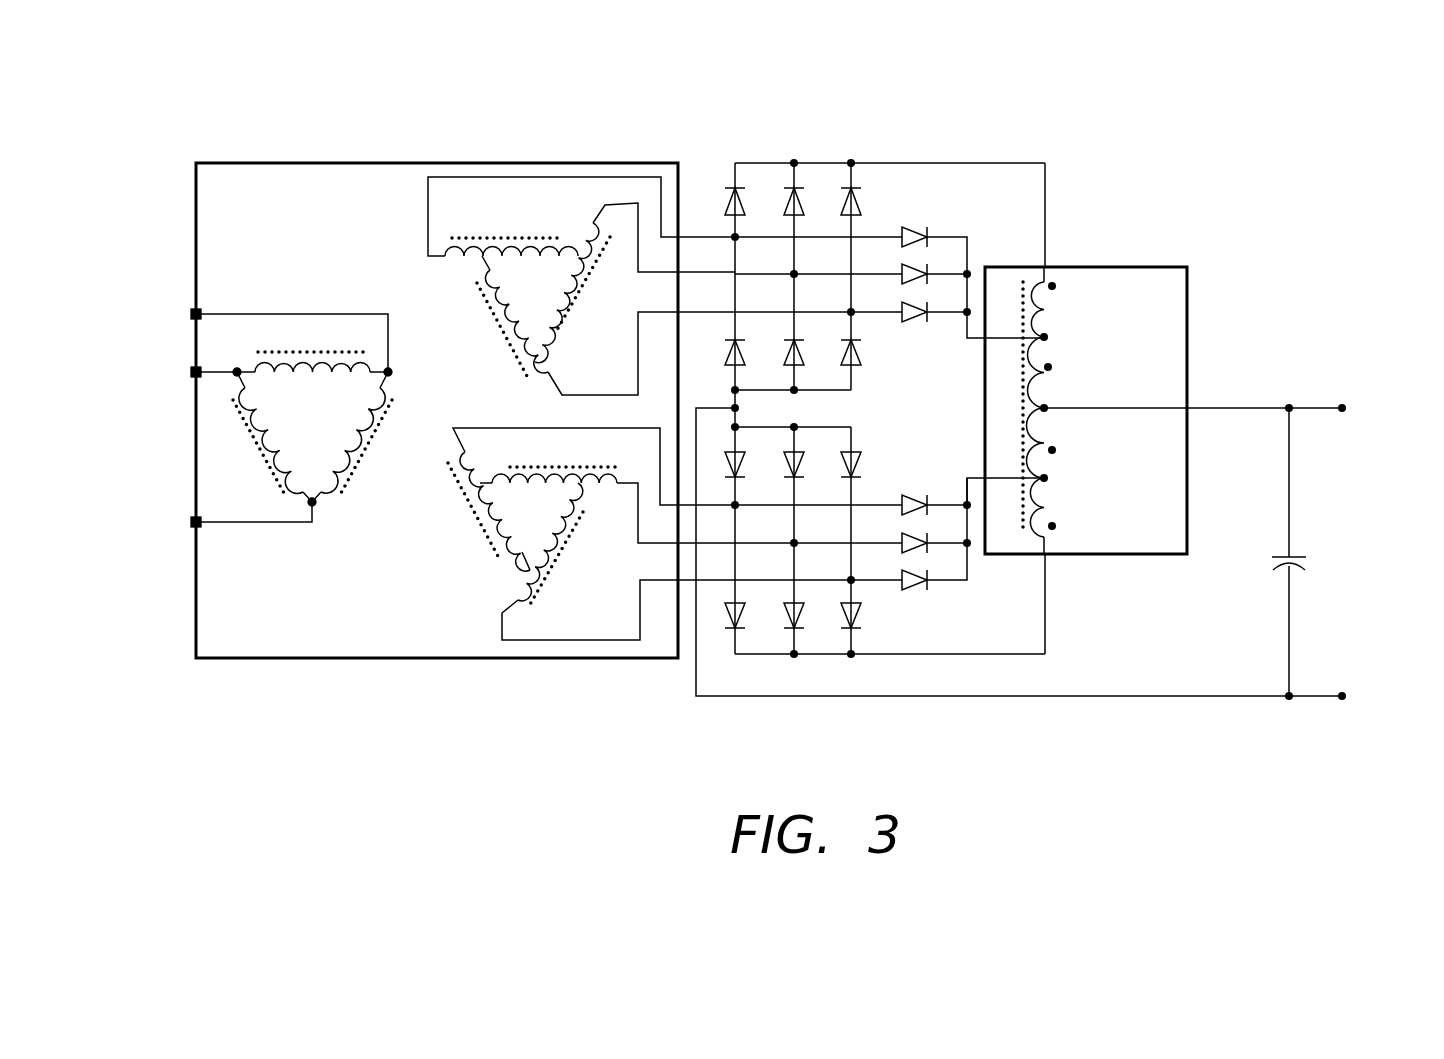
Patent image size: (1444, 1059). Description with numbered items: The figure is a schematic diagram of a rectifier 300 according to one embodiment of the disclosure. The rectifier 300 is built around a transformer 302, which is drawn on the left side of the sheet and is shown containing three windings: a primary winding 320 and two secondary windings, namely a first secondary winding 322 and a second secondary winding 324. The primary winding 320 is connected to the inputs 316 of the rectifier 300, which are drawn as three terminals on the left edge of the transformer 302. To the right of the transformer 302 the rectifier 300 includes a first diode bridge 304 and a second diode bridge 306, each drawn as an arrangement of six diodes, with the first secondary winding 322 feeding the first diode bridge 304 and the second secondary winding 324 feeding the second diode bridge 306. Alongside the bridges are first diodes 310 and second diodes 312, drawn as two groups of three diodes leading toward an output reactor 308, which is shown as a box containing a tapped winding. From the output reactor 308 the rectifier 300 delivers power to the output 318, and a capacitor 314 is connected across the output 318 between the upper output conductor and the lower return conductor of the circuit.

The rectifier 300 is at (263, 126).
The transformer 302 is at (437, 162).
The first diode bridge 304 is at (766, 145).
The second diode bridge 306 is at (768, 705).
The output reactor 308 is at (1125, 266).
The first diodes 310 is at (912, 225).
The second diodes 312 is at (925, 607).
The capacitor 314 is at (1300, 553).
The inputs 316 is at (192, 312).
The output 318 is at (1342, 408).
The primary winding 320 is at (335, 517).
The first secondary winding 322 is at (500, 345).
The second secondary winding 324 is at (490, 562).